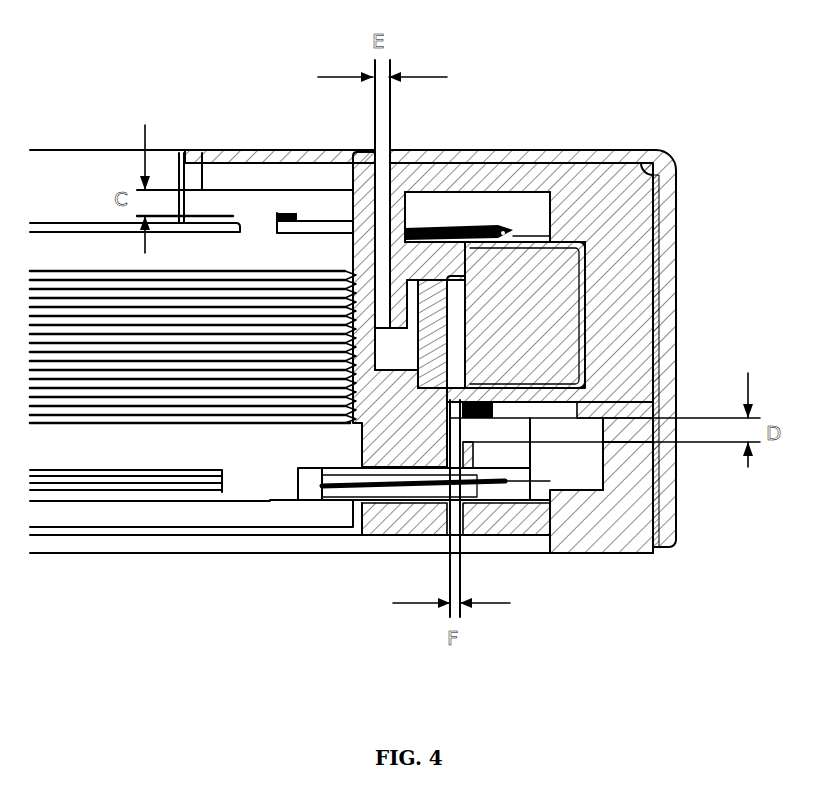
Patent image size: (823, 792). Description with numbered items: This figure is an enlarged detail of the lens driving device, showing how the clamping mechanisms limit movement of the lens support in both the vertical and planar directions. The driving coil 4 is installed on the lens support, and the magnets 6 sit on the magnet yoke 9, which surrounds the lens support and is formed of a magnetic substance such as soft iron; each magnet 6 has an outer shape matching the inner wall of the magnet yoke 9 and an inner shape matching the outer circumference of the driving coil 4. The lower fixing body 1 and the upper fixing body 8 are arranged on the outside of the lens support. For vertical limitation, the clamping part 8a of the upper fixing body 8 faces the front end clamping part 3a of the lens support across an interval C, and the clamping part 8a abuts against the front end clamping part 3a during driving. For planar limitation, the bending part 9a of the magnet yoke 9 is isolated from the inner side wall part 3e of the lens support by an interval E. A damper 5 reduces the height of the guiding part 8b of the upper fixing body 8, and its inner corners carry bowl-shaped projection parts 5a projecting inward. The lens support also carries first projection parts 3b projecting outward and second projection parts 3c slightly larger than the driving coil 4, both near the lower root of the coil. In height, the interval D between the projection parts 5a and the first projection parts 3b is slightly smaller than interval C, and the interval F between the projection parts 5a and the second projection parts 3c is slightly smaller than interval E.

The lower fixing body 1 is at (614, 543).
The front end clamping part 3a is at (272, 213).
The first projection part 3b is at (470, 443).
The second projection part 3c is at (417, 437).
The inner side wall part 3e is at (342, 427).
The driving coil 4 is at (603, 258).
The damper 5 is at (665, 395).
The projection part 5a is at (650, 370).
The magnet 6 is at (560, 297).
The upper fixing body 8 is at (560, 190).
The clamping part 8a is at (252, 190).
The guiding part 8b is at (661, 318).
The magnet yoke 9 is at (650, 155).
The bending part 9a is at (403, 213).